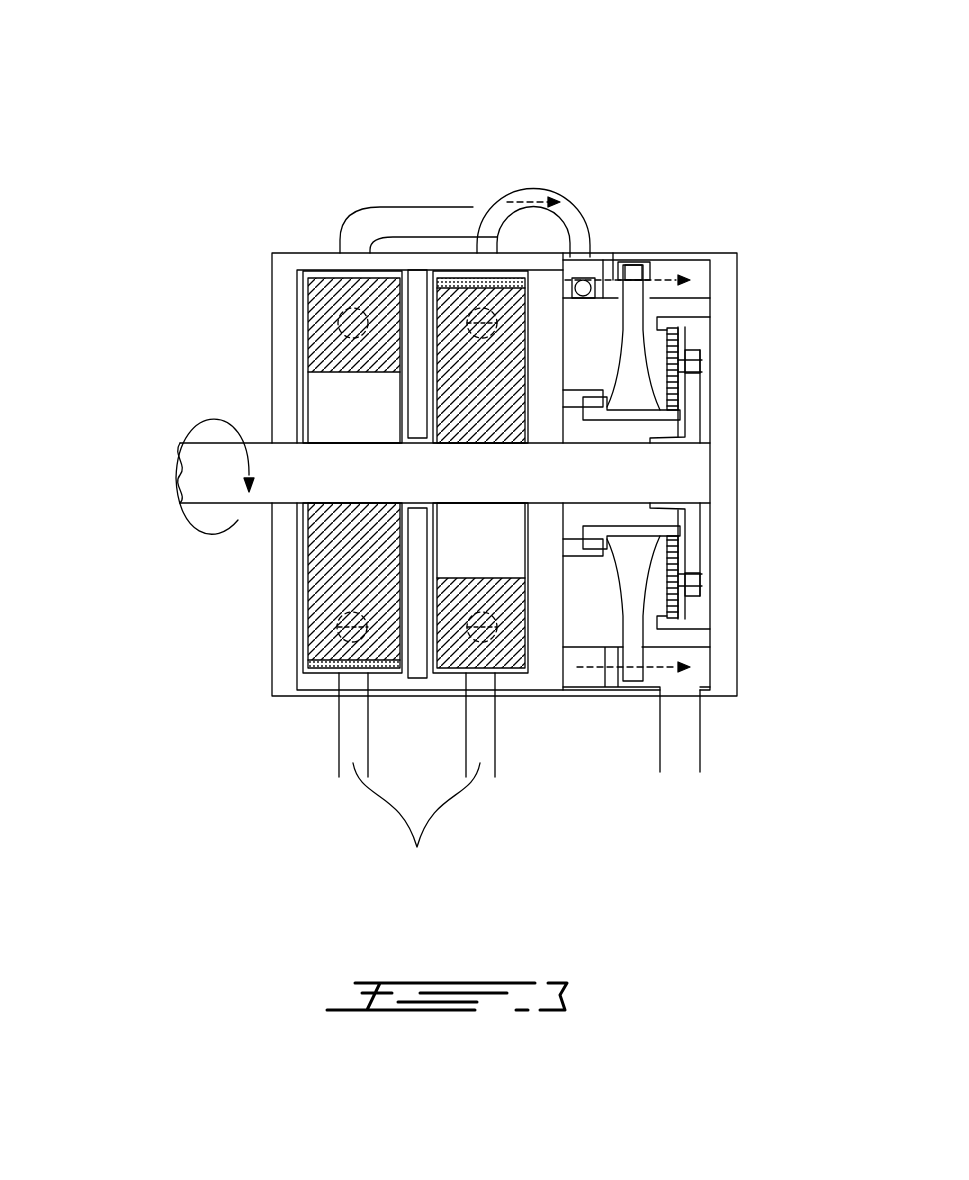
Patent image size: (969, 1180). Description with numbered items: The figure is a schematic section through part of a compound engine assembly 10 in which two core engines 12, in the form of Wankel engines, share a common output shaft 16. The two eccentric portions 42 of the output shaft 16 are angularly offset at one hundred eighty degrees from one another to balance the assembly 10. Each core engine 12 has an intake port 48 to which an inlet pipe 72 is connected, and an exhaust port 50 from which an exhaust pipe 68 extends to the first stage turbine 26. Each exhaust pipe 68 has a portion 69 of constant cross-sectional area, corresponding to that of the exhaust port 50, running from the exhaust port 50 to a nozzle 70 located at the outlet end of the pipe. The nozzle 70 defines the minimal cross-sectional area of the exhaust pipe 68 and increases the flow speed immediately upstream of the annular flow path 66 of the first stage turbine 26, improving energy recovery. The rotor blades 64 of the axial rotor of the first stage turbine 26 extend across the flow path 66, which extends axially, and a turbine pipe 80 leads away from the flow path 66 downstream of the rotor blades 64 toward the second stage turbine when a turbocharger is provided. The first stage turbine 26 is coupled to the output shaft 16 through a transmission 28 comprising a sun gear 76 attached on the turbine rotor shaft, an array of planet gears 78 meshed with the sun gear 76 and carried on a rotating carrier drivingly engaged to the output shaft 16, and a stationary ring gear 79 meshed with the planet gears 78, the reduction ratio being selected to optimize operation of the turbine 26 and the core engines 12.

The compound engine assembly 10 is at (205, 260).
The core engine 12 is at (298, 273).
The output shaft 16 is at (282, 482).
The first stage turbine 26 is at (651, 265).
The transmission 28 is at (703, 380).
The eccentric portion 42 is at (473, 460).
The intake port 48 is at (522, 670).
The exhaust port 50 is at (480, 333).
The rotor blades 64 is at (633, 293).
The flow path 66 is at (612, 272).
The exhaust pipe 68 is at (372, 230).
The portion of the exhaust pipe 69 is at (572, 212).
The nozzle 70 is at (596, 285).
The inlet pipe 72 is at (417, 778).
The sun gear 76 is at (673, 400).
The planet gears 78 is at (673, 570).
The ring gear 79 is at (672, 617).
The turbine pipe 80 is at (683, 742).